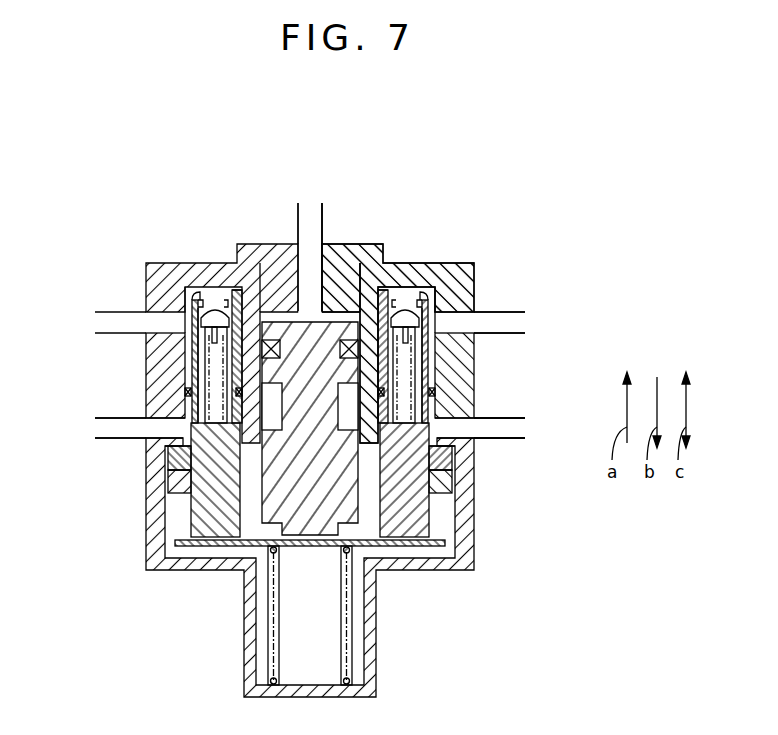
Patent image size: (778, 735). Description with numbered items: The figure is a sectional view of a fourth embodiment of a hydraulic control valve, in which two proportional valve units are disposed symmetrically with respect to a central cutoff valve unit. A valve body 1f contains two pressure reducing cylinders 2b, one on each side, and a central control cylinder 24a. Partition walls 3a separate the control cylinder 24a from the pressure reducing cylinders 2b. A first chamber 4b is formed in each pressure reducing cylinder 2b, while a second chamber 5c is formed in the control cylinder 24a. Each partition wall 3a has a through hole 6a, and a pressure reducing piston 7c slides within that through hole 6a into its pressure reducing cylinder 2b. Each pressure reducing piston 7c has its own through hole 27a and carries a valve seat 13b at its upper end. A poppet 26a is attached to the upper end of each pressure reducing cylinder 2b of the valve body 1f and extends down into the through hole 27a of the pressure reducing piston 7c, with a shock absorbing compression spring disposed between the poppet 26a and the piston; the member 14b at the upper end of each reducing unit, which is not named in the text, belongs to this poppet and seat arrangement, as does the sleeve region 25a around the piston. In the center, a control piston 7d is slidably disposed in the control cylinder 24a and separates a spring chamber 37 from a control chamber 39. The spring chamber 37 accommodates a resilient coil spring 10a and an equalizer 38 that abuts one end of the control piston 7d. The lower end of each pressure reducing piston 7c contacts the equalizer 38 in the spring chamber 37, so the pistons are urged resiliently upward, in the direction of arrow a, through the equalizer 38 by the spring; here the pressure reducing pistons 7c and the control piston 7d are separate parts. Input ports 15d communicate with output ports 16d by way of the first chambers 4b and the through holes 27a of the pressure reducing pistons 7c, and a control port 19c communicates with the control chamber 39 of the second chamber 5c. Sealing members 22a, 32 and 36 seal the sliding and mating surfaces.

The valve body 1f is at (465, 282).
The pressure reducing cylinder 2b is at (185, 295).
The partition wall 3a is at (180, 482).
The first chamber 4b is at (233, 290).
The second chamber 5c is at (296, 345).
The through hole 6a is at (187, 432).
The pressure reducing piston 7c is at (210, 503).
The control piston 7d is at (300, 359).
The resilient coil spring 10a is at (273, 652).
The valve seat 13b is at (185, 293).
The valve cup 14b is at (198, 295).
The input port 15d is at (108, 430).
The output port 16d is at (108, 311).
The control port 19c is at (310, 213).
The sealing member 22a is at (168, 462).
The control cylinder 24a is at (333, 310).
The valve sleeve 25a is at (197, 352).
The poppet 26a is at (215, 296).
The through hole 27a is at (213, 373).
The sealing member 32 is at (188, 392).
The sealing member 36 is at (357, 270).
The spring chamber 37 is at (302, 607).
The equalizer 38 is at (387, 546).
The control chamber 39 is at (308, 312).